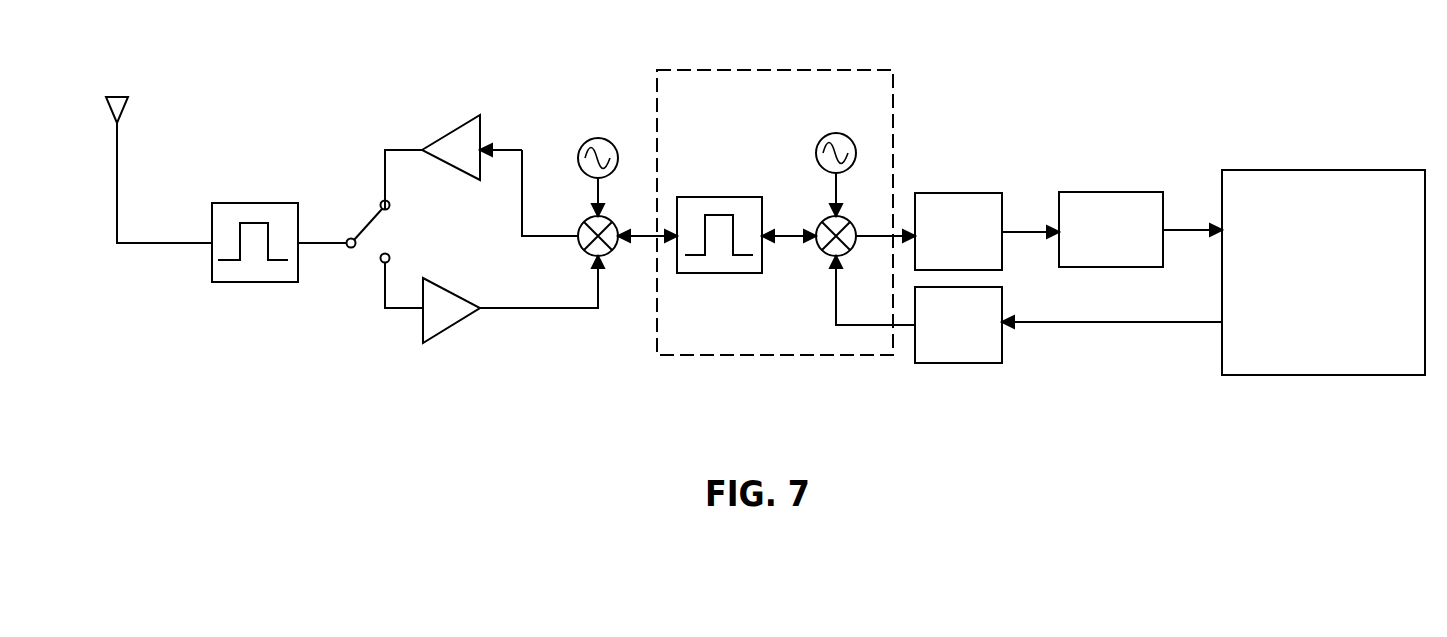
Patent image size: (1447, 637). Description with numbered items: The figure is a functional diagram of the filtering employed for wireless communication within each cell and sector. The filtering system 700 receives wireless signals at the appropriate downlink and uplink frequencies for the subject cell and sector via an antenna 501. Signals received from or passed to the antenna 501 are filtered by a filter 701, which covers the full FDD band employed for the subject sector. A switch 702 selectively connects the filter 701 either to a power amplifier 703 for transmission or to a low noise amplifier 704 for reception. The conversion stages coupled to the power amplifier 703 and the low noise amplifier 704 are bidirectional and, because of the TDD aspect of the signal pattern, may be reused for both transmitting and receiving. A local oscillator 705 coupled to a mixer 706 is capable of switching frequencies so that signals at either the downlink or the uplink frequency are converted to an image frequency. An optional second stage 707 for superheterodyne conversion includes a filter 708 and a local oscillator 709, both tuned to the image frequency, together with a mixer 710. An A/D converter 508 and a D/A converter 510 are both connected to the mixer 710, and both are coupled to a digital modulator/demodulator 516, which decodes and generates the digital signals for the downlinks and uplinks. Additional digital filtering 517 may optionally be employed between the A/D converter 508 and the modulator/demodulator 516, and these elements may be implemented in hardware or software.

The antenna 501 is at (117, 96).
The filter 701 is at (252, 203).
The switch 702 is at (370, 230).
The power amplifier 703 is at (448, 137).
The low noise amplifier 704 is at (456, 291).
The local oscillator 705 is at (597, 138).
The mixer 706 is at (608, 253).
The second stage 707 is at (765, 70).
The filter 708 is at (718, 197).
The local oscillator 709 is at (836, 133).
The mixer 710 is at (826, 252).
The A/D converter 508 is at (958, 193).
The digital filter 517 is at (1110, 192).
The digital modulator/demodulator 516 is at (1323, 170).
The D/A converter 510 is at (960, 363).
The filtering system 700 is at (583, 418).